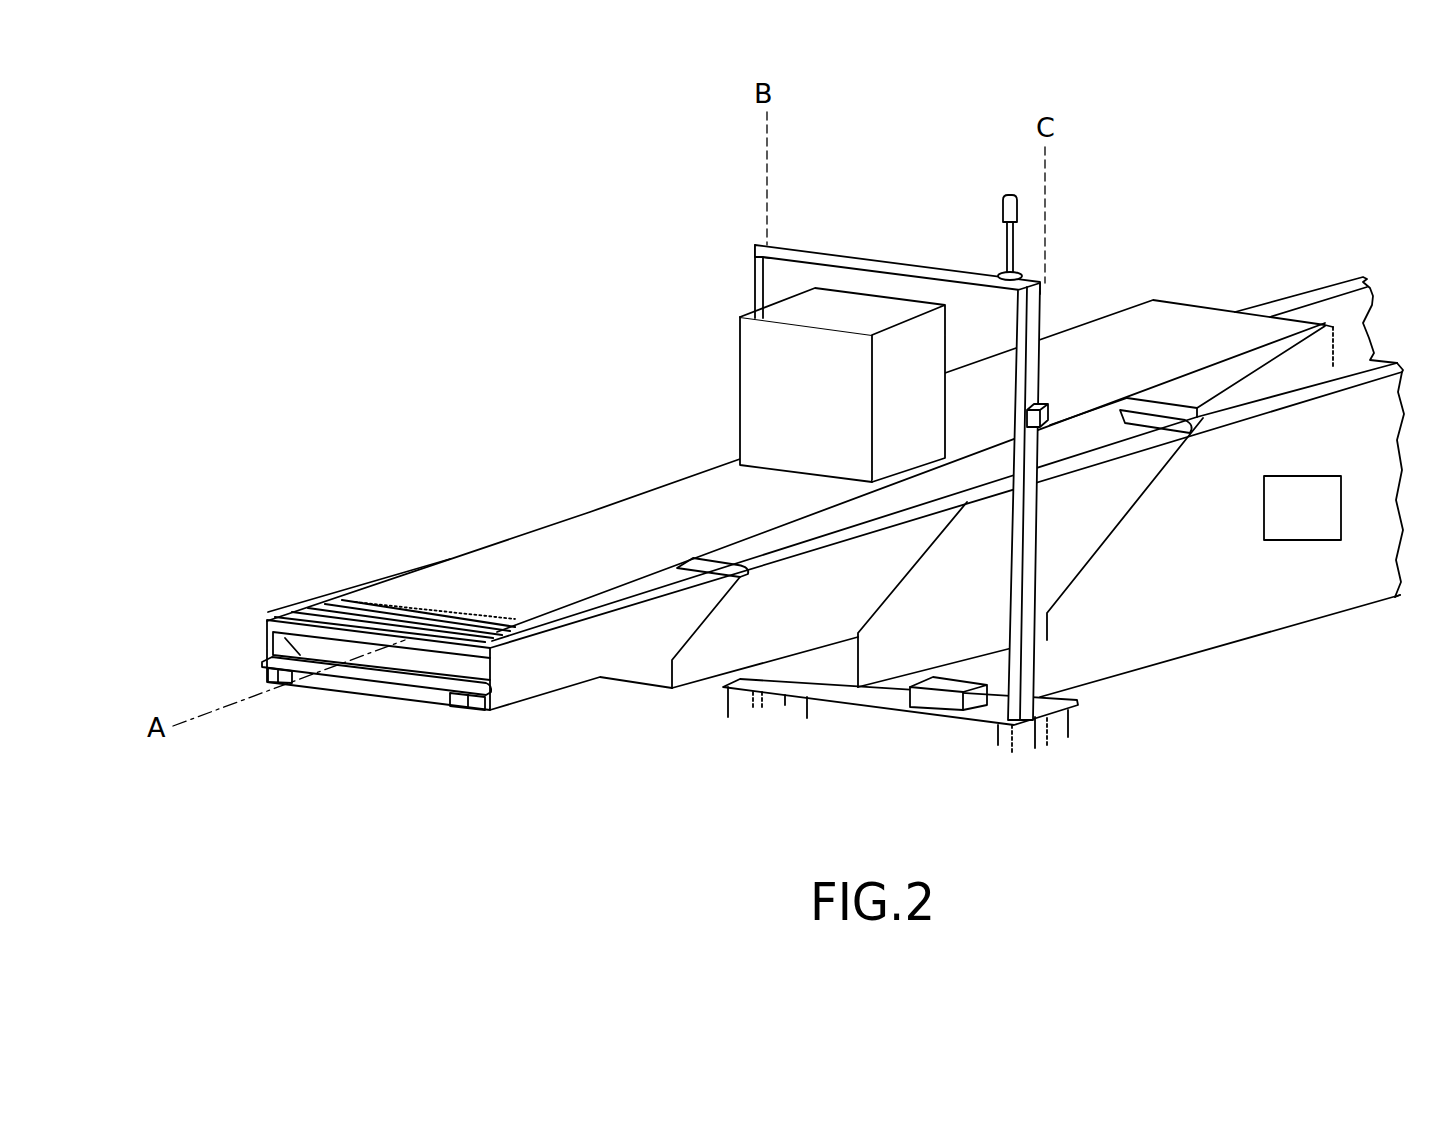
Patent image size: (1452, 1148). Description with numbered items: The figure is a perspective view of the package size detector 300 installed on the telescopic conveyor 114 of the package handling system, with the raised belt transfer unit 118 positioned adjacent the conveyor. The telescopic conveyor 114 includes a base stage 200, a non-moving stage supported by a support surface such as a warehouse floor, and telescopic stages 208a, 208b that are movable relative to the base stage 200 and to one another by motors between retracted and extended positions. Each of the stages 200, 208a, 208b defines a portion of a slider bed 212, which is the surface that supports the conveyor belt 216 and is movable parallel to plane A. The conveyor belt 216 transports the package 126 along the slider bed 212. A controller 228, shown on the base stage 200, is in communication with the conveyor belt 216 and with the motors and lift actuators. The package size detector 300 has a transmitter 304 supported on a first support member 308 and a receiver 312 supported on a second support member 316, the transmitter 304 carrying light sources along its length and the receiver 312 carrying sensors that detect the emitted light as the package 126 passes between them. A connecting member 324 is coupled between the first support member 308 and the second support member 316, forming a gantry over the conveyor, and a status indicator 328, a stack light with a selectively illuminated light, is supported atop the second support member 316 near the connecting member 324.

The telescopic conveyor 114 is at (1352, 598).
The raised belt transfer unit 118 is at (1270, 266).
The package 126 is at (757, 390).
The base stage 200 is at (1243, 615).
The telescopic stage 208a is at (800, 655).
The telescopic stage 208b is at (627, 652).
The slider bed 212 is at (880, 515).
The conveyor belt 216 is at (580, 530).
The controller 228 is at (1322, 521).
The package size detector 300 is at (831, 438).
The transmitter 304 is at (763, 294).
The first support member 308 is at (752, 270).
The receiver 312 is at (1013, 342).
The second support member 316 is at (1043, 312).
The connecting member 324 is at (832, 250).
The status indicator 328 is at (975, 213).